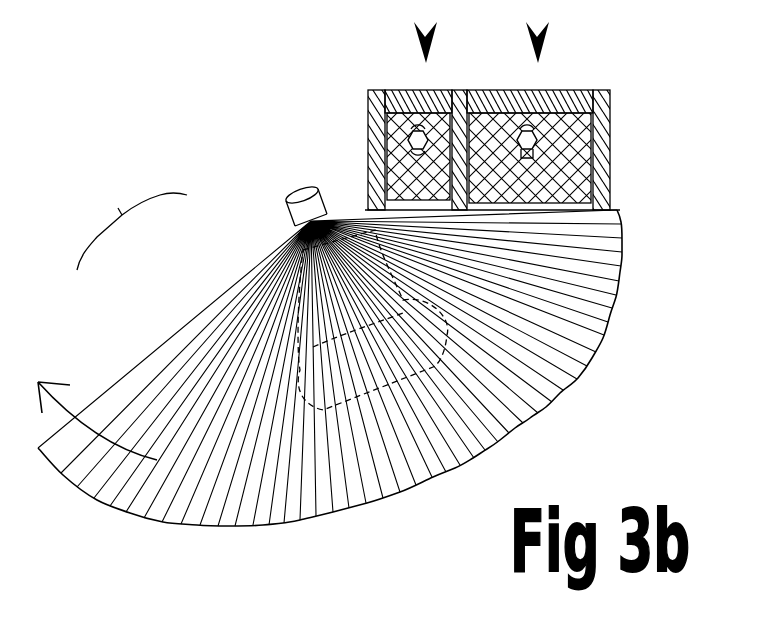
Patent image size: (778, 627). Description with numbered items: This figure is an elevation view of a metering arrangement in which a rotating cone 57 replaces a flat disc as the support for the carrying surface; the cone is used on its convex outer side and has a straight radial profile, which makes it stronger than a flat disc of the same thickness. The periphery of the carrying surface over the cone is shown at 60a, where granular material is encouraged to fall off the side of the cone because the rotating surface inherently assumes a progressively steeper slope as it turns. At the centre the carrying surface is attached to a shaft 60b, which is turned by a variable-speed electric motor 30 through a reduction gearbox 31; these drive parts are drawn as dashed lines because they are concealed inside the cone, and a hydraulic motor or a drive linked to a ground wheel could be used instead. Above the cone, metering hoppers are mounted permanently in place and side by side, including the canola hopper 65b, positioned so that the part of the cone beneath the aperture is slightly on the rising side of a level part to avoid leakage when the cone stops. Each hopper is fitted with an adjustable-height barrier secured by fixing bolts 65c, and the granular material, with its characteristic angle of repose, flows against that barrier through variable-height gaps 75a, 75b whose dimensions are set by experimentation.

The variable-speed electric motor 30 is at (327, 367).
The reduction gearbox 31 is at (283, 278).
The rotating cone 57 is at (127, 226).
The periphery of the carrying surface 60a is at (153, 522).
The shaft 60b is at (280, 212).
The canola hopper 65b is at (436, 92).
The fixing bolts 65c is at (557, 97).
The variable-height gap 75a is at (607, 200).
The variable-height gap 75b is at (408, 205).